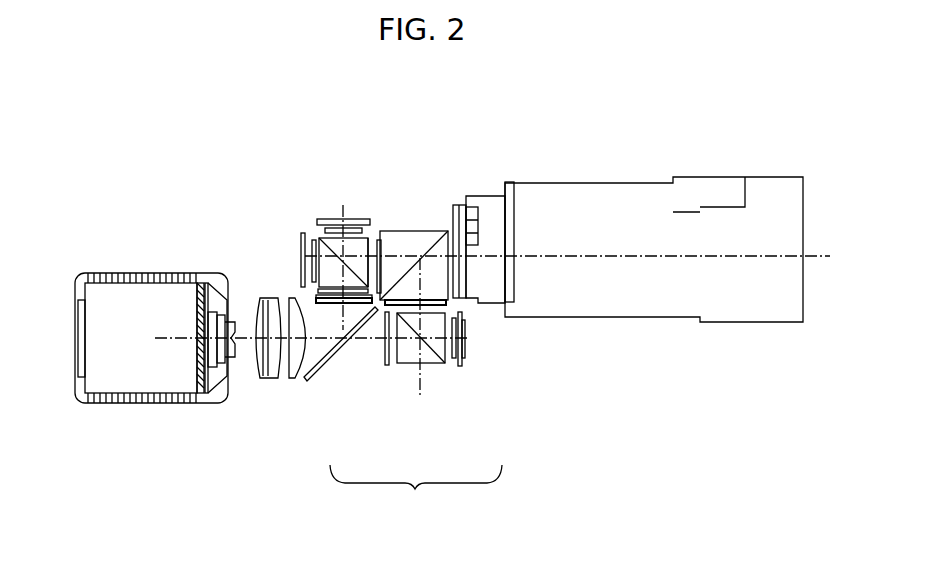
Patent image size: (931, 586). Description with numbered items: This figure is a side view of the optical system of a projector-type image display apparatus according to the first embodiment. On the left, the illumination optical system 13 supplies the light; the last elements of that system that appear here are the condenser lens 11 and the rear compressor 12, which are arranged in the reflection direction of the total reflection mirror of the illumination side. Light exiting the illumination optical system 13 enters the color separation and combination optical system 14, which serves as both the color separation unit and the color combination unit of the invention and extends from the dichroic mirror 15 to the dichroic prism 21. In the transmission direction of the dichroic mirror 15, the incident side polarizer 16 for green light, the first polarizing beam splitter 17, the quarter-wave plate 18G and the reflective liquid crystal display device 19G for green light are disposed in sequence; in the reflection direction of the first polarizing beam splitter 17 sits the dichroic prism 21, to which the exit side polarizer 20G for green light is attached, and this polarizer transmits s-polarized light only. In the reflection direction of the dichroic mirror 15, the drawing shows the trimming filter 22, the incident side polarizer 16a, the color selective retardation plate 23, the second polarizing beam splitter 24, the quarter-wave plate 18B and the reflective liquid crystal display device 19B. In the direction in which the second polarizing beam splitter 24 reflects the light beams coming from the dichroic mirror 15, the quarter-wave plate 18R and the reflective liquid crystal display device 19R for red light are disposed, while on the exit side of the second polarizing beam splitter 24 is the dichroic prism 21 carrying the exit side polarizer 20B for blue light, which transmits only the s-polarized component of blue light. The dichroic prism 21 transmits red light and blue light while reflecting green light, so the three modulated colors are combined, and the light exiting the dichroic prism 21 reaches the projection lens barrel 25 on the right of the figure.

The condenser lens 11 is at (265, 378).
The rear compressor 12 is at (298, 378).
The illumination optical system 13 is at (135, 407).
The color separation and combination optical system 14 is at (416, 492).
The dichroic mirror 15 is at (323, 369).
The incident side polarizer for green light 16 is at (385, 364).
The incident side polarizer 16a is at (316, 293).
The first polarizing beam splitter 17 is at (423, 364).
The quarter-wave plate 18R is at (318, 238).
The quarter-wave plate 18G is at (455, 360).
The quarter-wave plate 18B is at (347, 217).
The reflective liquid crystal display device for red light 19R is at (300, 237).
The reflective liquid crystal display device for green light 19G is at (464, 369).
The reflective liquid crystal display device 19B is at (360, 218).
The exit side polarizer for blue light 20B is at (385, 243).
The exit side polarizer for green light 20G is at (443, 305).
The dichroic prism 21 is at (432, 236).
The trimming filter 22 is at (314, 299).
The color selective retardation plate 23 is at (314, 288).
The second polarizing beam splitter 24 is at (372, 238).
The projection lens barrel 25 is at (643, 304).